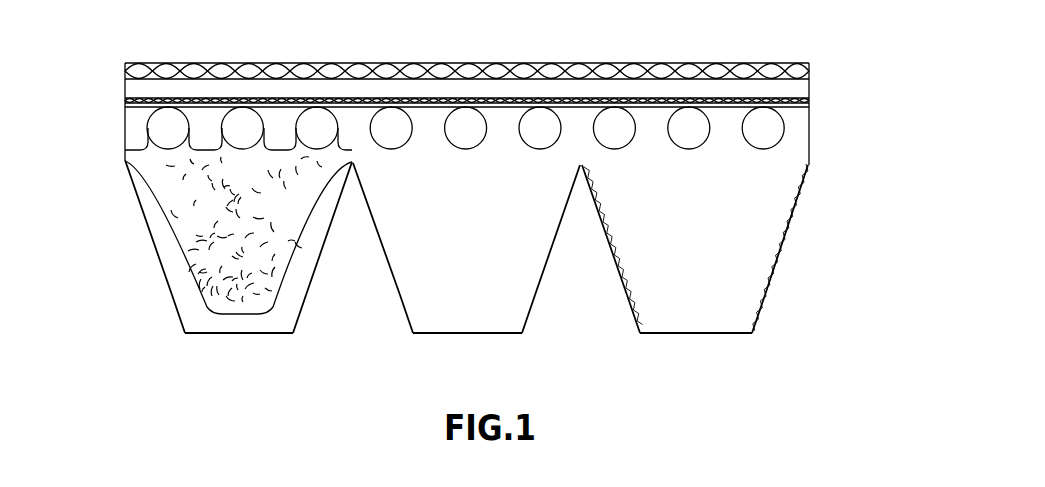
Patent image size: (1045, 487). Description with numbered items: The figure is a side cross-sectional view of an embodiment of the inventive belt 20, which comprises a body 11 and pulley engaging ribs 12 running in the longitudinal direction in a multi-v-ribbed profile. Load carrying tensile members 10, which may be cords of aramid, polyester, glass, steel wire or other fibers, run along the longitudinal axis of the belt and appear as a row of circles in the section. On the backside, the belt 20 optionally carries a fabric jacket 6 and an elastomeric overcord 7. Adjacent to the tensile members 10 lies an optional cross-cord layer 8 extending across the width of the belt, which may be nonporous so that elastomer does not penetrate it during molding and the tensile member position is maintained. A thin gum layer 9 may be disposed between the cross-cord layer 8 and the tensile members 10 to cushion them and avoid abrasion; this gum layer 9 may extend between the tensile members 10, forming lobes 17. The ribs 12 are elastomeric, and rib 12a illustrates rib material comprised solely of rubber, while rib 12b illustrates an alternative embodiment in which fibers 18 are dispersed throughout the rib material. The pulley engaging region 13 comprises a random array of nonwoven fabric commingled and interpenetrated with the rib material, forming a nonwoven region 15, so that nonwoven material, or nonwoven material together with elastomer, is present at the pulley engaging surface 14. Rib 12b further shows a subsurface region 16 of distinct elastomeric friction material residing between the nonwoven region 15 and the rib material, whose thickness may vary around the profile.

The belt 20 is at (563, 48).
The jacket 6 is at (662, 68).
The overcord 7 is at (800, 83).
The cross-cord layer 8 is at (243, 98).
The thin gum layer 9 is at (810, 104).
The tensile members 10 is at (768, 120).
The body 11 is at (770, 165).
The pulley engaging ribs 12 is at (717, 213).
The rib 12a is at (473, 237).
The rib 12b is at (220, 238).
The pulley engaging region 13 is at (790, 273).
The pulley engaging surface 14 is at (623, 298).
The nonwoven region 15 is at (205, 335).
The subsurface region 16 is at (247, 320).
The lobes 17 is at (205, 135).
The fibers 18 is at (180, 168).